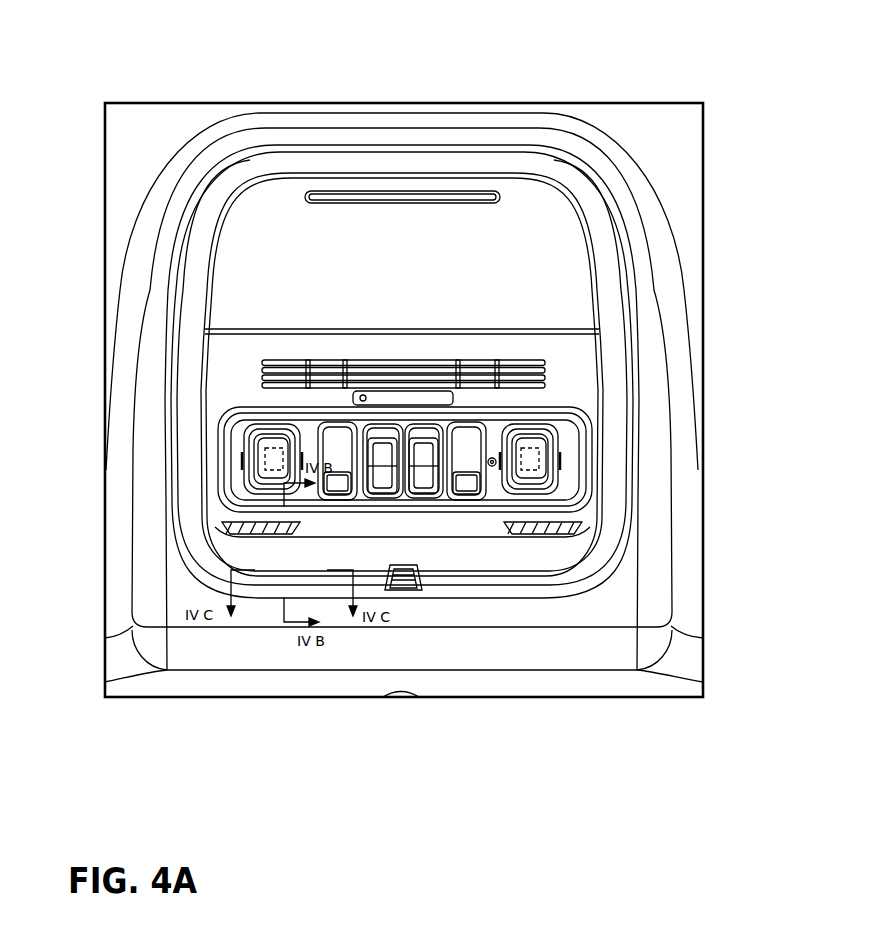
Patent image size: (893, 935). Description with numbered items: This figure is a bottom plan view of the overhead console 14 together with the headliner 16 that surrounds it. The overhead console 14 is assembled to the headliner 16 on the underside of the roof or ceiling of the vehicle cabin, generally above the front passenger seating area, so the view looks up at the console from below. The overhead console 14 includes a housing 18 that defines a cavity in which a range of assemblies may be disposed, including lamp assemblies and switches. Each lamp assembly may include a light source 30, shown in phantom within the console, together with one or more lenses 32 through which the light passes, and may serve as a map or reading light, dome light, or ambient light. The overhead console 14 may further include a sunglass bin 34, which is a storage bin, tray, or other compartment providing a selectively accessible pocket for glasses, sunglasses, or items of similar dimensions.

The overhead console 14 is at (570, 186).
The headliner 16 is at (135, 127).
The housing 18 is at (255, 170).
The light source 30 is at (267, 457).
The lens 32 is at (260, 474).
The sunglass bin 34 is at (210, 515).